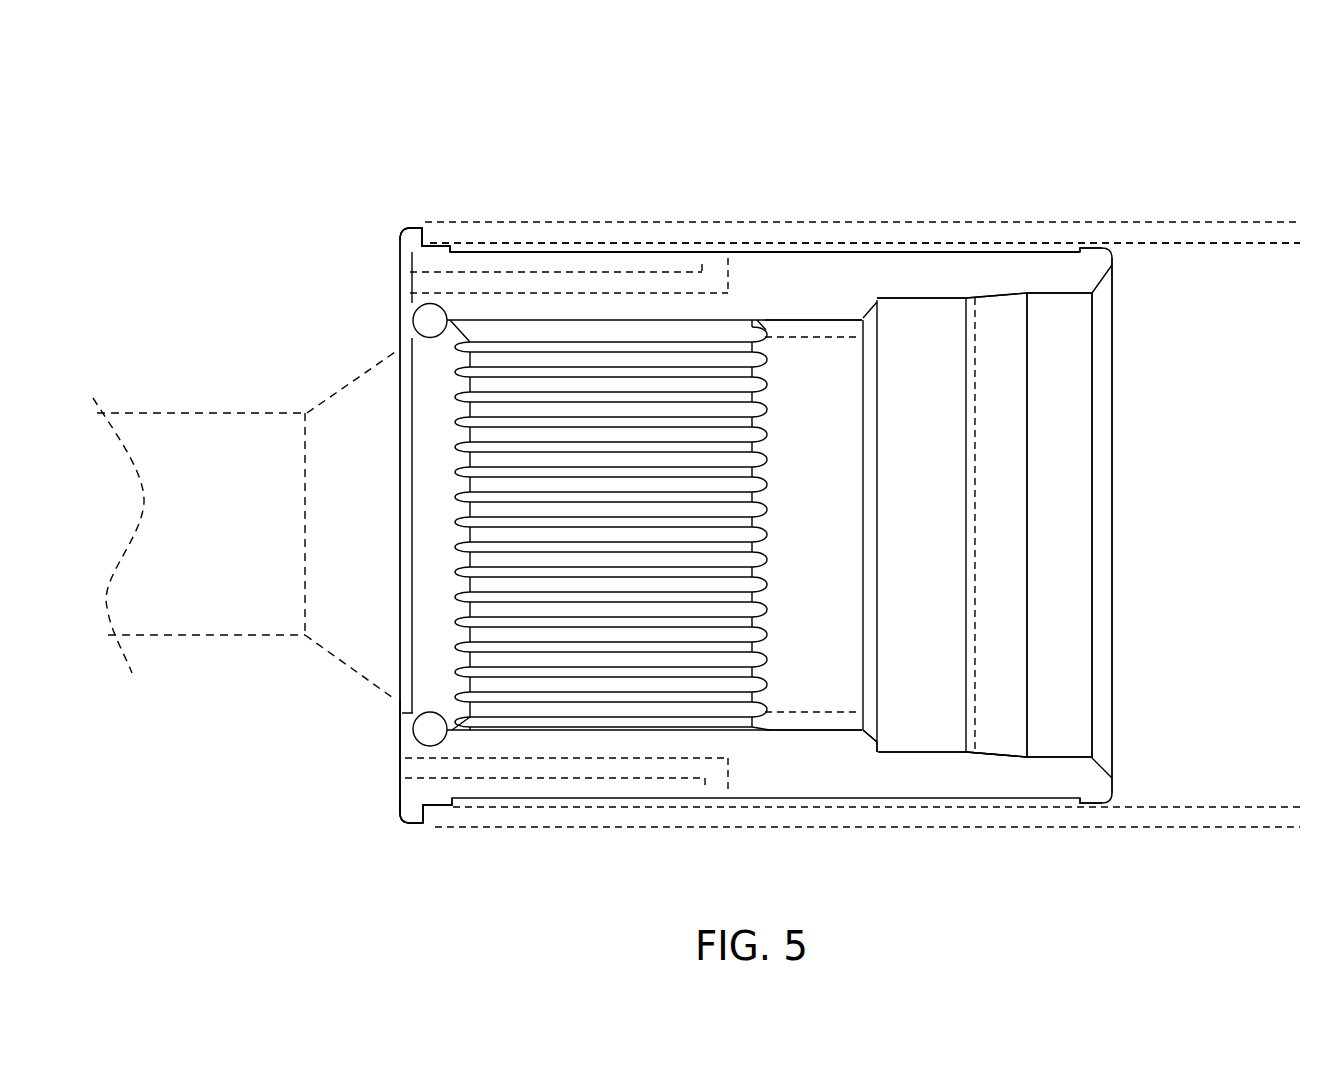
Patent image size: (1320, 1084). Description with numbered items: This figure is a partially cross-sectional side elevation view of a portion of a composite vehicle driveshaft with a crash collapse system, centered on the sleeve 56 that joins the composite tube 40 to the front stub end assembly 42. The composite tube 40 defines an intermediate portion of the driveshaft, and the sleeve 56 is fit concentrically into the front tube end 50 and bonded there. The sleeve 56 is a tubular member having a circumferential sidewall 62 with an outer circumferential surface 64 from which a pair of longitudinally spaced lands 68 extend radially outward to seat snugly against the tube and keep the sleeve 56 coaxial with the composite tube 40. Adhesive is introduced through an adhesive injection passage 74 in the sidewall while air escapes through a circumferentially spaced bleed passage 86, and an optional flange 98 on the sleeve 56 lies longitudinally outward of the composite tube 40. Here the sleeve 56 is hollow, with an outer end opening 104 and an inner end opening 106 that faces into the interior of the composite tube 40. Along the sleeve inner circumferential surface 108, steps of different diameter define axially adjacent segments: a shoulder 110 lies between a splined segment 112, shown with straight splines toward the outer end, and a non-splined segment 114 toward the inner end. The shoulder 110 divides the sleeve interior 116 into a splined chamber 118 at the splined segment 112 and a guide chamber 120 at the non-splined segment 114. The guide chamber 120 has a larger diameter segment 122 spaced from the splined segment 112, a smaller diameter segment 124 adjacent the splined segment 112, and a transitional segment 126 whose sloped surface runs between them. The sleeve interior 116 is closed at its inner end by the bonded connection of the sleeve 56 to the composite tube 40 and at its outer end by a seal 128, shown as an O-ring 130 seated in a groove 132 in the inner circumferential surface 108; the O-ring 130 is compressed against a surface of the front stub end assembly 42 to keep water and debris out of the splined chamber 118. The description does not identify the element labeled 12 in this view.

The fitting assembly 12 is at (213, 140).
The composite tube 40 is at (1218, 165).
The front stub end assembly 42 is at (172, 392).
The front tube end 50 is at (880, 92).
The sleeve 56 is at (263, 245).
The circumferential sidewall 62 is at (865, 248).
The outer circumferential surface 64 is at (972, 243).
The lands 68 is at (433, 242).
The adhesive injection passage 74 is at (398, 283).
The bleed passage 86 is at (385, 770).
The flange 98 is at (400, 824).
The outer end opening 104 is at (382, 683).
The inner end opening 106 is at (1118, 683).
The sleeve inner circumferential surface 108 is at (940, 322).
The shoulder 110 is at (893, 740).
The splined segment 112 is at (792, 712).
The non-splined segment 114 is at (1013, 740).
The sleeve interior 116 is at (1063, 591).
The splined chamber 118 is at (820, 662).
The guide chamber 120 is at (947, 737).
The larger diameter segment 122 is at (1057, 285).
The smaller diameter segment 124 is at (908, 295).
The transitional segment 126 is at (1000, 287).
The seal 128 is at (403, 322).
The O-ring 130 is at (412, 338).
The groove 132 is at (412, 300).